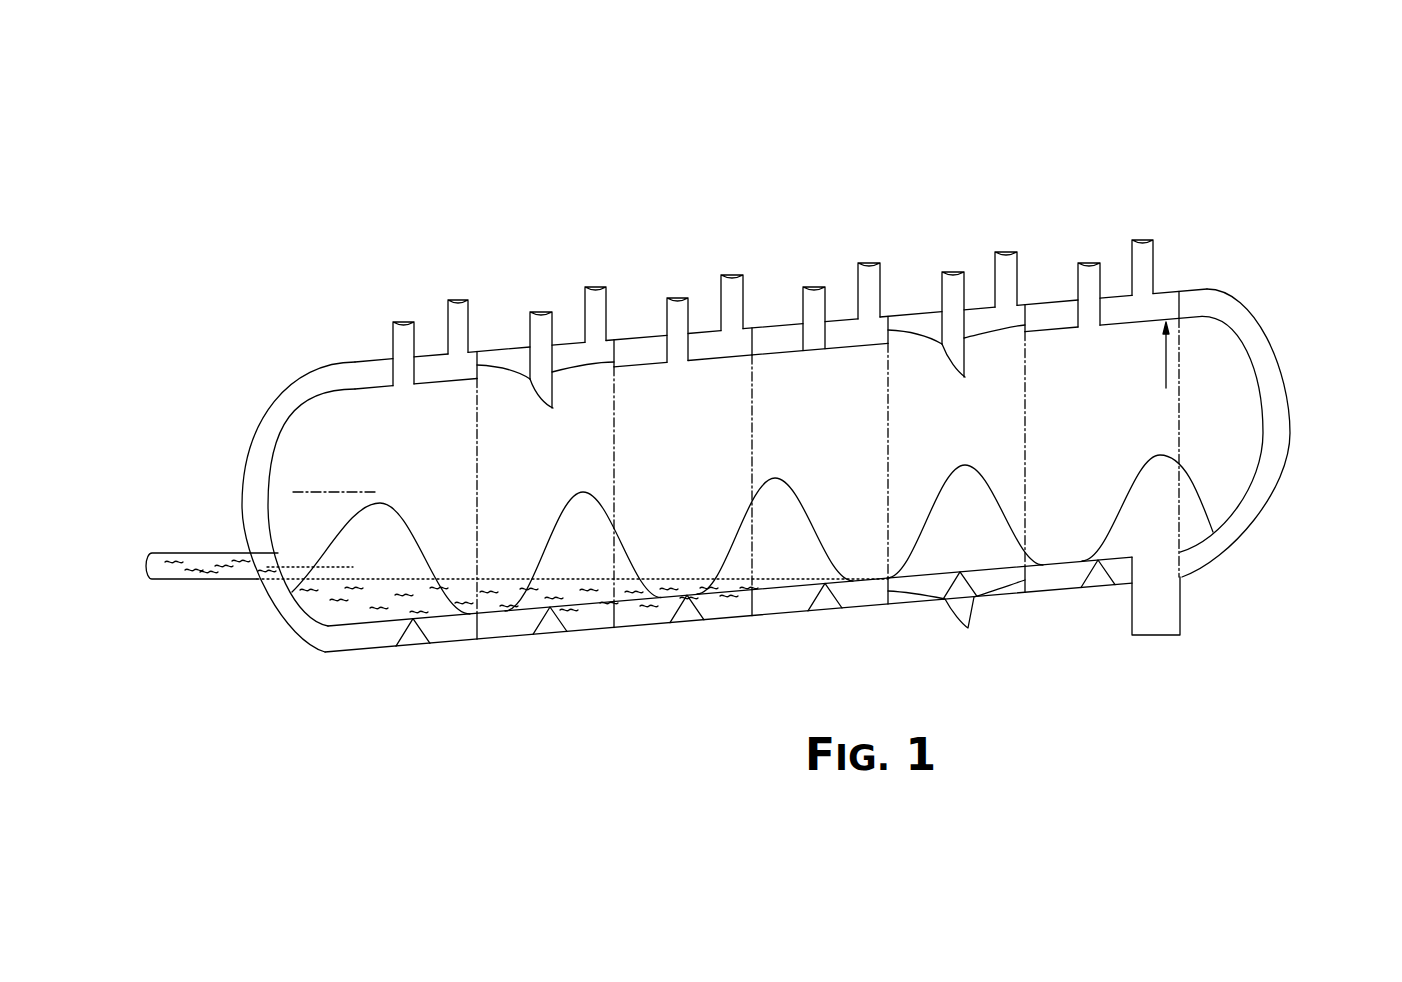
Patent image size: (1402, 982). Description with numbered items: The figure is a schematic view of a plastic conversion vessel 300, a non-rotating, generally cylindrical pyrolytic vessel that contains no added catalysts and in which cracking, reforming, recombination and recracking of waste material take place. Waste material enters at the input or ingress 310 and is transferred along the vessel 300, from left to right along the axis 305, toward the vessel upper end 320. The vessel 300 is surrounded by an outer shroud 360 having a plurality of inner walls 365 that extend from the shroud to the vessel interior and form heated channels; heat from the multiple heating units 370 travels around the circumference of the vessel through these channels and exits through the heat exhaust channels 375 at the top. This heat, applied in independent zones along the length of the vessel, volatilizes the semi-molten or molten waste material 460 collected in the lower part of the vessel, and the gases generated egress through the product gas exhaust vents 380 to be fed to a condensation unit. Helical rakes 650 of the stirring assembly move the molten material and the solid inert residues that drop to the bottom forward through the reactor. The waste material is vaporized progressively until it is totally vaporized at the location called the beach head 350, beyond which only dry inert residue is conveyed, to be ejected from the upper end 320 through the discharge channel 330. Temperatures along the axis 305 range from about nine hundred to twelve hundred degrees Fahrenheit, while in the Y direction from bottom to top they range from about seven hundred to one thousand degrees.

The vessel 300 is at (824, 170).
The axis 305 is at (357, 492).
The input or ingress 310 is at (307, 538).
The vessel upper end 320 is at (1222, 490).
The discharge channel 330 is at (1182, 577).
The beach head 350 is at (823, 582).
The outer shroud 360 is at (358, 372).
The inner walls 365 is at (751, 471).
The heating units 370 is at (550, 636).
The heat exhaust channels 375 is at (585, 288).
The product gas exhaust vents 380 is at (403, 402).
The waste material 460 is at (353, 613).
The helical rakes 650 is at (858, 472).